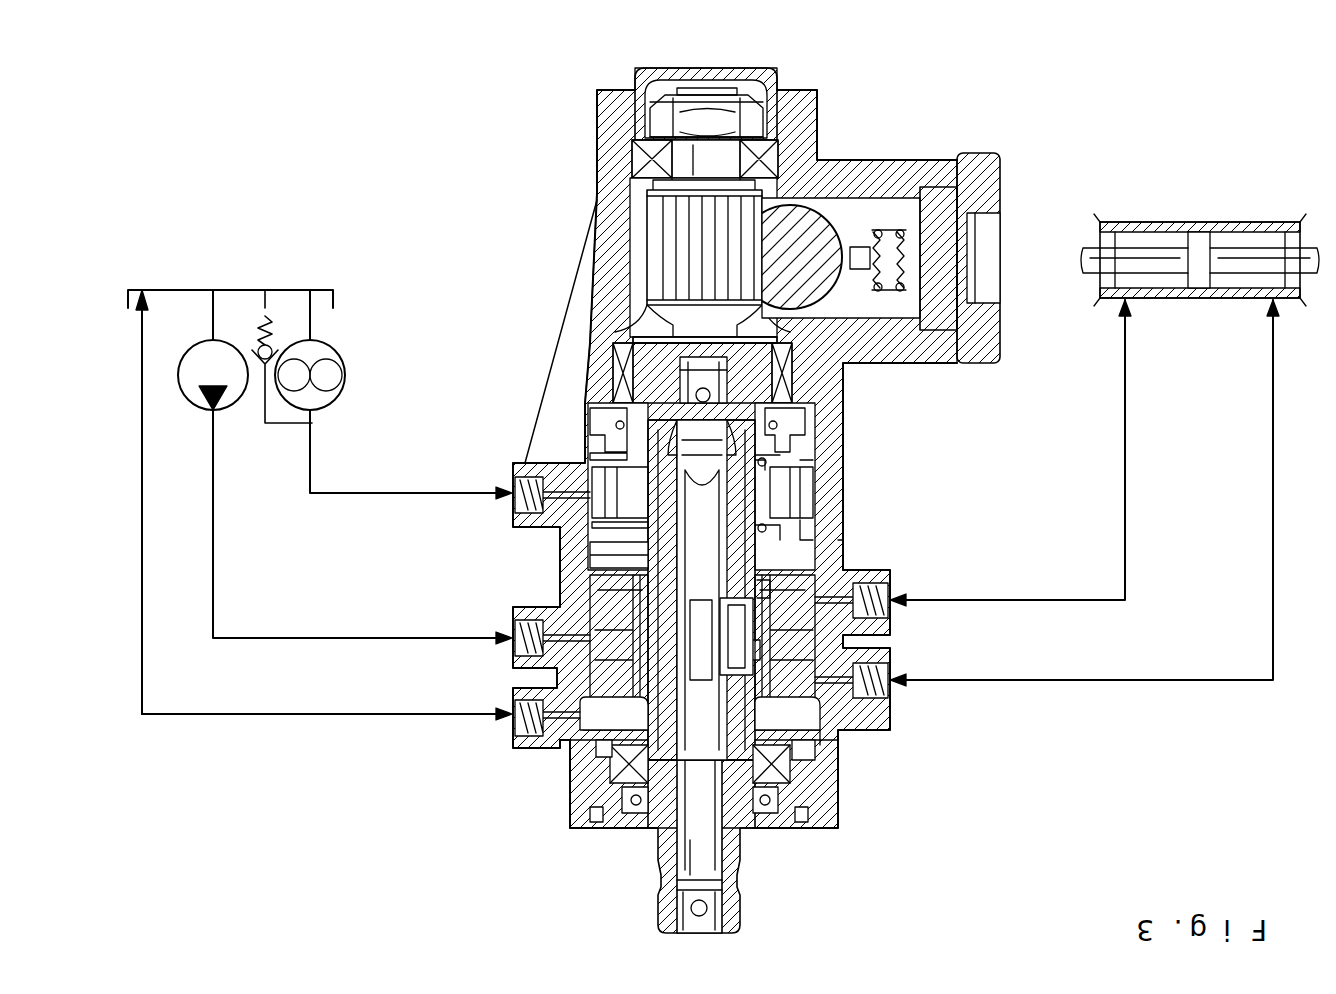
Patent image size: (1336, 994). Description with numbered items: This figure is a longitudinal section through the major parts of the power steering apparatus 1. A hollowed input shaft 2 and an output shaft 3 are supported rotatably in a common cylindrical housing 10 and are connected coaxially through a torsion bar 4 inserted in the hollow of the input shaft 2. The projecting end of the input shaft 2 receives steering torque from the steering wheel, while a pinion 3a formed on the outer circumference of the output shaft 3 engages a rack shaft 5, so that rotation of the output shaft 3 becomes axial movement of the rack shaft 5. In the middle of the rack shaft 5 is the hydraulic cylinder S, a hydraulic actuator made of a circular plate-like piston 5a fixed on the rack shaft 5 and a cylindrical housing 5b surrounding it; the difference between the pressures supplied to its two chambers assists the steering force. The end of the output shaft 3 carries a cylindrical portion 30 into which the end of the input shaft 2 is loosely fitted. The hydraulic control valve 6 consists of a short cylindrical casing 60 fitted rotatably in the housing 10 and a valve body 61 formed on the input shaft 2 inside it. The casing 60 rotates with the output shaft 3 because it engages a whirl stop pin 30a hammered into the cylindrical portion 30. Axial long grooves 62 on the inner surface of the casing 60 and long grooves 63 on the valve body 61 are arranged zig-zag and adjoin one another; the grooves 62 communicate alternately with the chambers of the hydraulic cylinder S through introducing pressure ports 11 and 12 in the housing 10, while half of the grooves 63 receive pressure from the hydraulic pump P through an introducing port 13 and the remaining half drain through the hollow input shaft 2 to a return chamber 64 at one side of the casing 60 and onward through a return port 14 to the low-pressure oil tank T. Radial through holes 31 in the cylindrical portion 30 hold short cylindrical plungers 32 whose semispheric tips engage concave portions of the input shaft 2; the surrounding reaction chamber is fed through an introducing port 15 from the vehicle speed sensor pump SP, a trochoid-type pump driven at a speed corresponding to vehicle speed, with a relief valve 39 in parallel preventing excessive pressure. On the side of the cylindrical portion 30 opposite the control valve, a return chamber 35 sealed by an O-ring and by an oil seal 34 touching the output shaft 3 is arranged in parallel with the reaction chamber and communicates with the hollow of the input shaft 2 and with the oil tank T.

The valve housing 1 is at (830, 487).
The input shaft 2 is at (655, 850).
The output shaft 3 is at (620, 385).
The pinion 3a is at (645, 248).
The torsion bar 4 is at (583, 790).
The rack shaft 5 is at (900, 160).
The piston 5a is at (1198, 287).
The cylindrical housing 5b is at (1235, 298).
The hydraulic control valve 6 is at (596, 764).
The housing 10 is at (835, 545).
The introducing pressure port 11 is at (890, 700).
The introducing pressure port 12 is at (895, 612).
The introducing port 13 is at (505, 648).
The return port 14 is at (505, 728).
The introducing port 15 is at (510, 480).
The cylindrical portion 30 is at (850, 425).
The whirl stop pin 30a is at (600, 560).
The through holes 31 is at (860, 500).
The plungers 32 is at (855, 468).
The oil seal 34 is at (605, 412).
The return chamber 35 is at (590, 422).
The relief valve 39 is at (253, 333).
The casing 60 is at (600, 748).
The valve body 61 is at (600, 725).
The long grooves 62 is at (595, 600).
The long grooves 63 is at (845, 648).
The return chamber 64 is at (800, 720).
The hydraulic pump P is at (233, 407).
The oil tank T is at (128, 300).
The hydraulic cylinder S is at (1104, 413).
The vehicle speed sensor pump SP is at (342, 350).